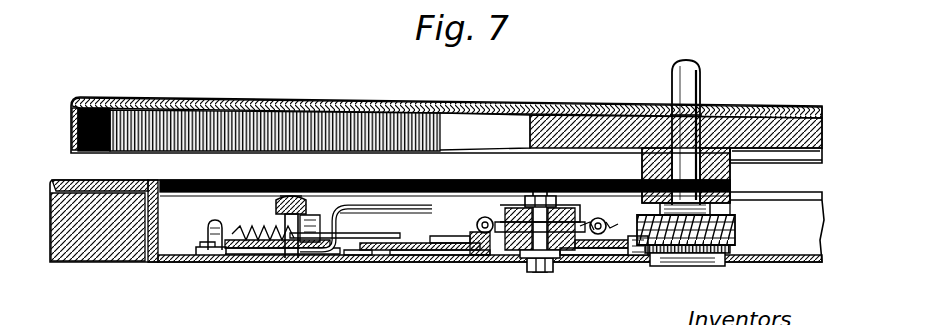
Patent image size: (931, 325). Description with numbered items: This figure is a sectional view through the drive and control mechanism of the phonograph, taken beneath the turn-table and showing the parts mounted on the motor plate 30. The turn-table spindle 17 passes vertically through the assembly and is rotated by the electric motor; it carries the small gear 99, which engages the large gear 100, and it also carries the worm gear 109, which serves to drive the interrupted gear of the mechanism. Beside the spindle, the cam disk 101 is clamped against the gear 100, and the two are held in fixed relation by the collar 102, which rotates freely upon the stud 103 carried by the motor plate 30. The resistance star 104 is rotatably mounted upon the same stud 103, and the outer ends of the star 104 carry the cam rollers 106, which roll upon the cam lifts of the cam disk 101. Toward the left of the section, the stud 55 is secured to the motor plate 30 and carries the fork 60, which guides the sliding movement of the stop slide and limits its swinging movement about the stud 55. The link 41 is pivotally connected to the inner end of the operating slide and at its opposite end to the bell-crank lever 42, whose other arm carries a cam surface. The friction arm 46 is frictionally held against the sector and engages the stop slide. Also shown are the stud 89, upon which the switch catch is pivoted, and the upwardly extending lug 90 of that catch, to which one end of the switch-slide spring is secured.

The spindle 17 is at (692, 62).
The motor plate 30 is at (412, 255).
The link 41 is at (414, 246).
The bell-crank lever 42 is at (452, 264).
The friction arm 46 is at (362, 242).
The stud 55 is at (300, 194).
The fork 60 is at (342, 207).
The stud 89 is at (207, 246).
The lug 90 is at (214, 256).
The small gear 99 is at (738, 264).
The large gear 100 is at (634, 262).
The cam disk 101 is at (592, 258).
The collar 102 is at (526, 274).
The stud 103 is at (540, 196).
The resistance star 104 is at (500, 264).
The cam rollers 106 is at (600, 226).
The worm gear 109 is at (742, 222).